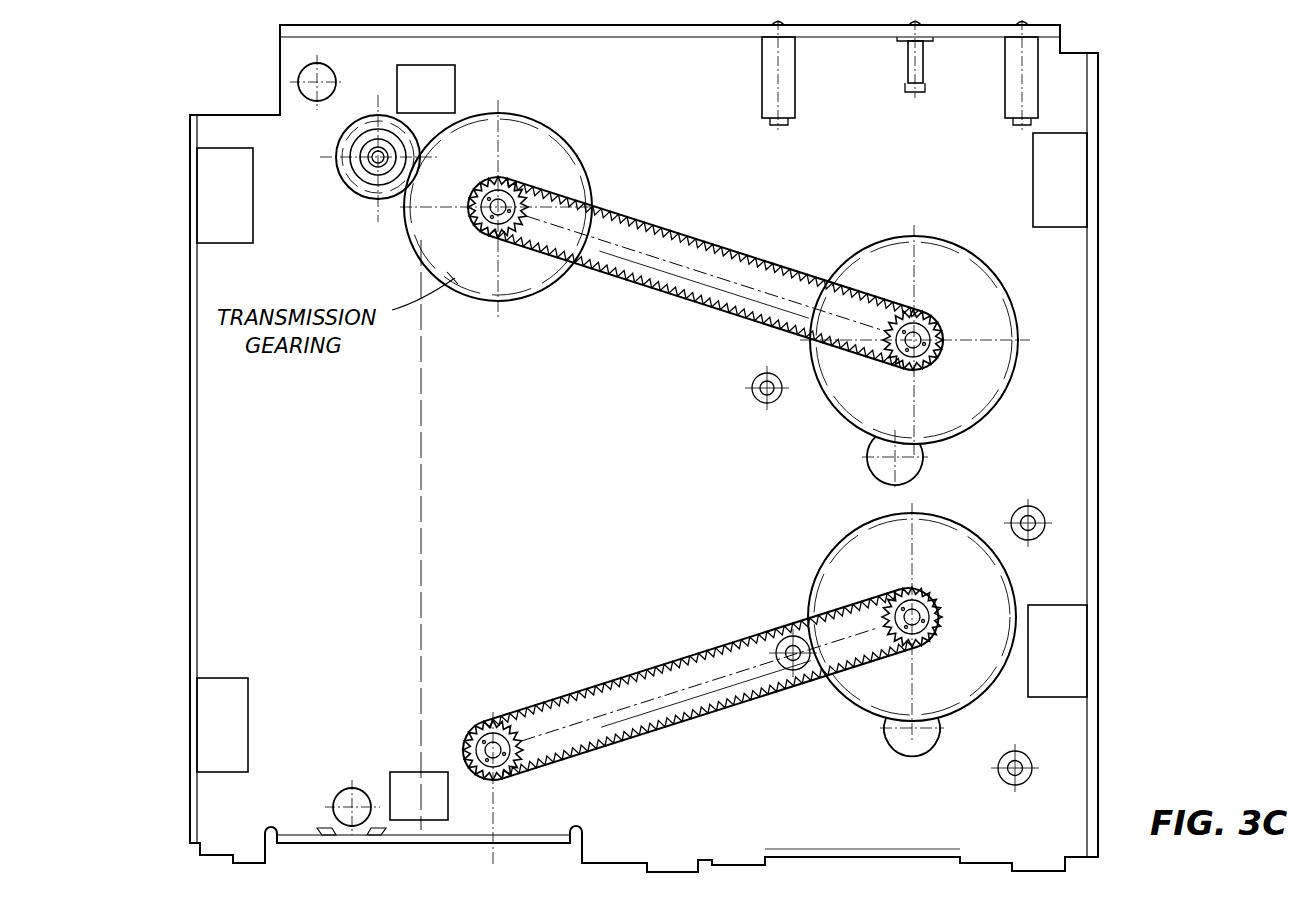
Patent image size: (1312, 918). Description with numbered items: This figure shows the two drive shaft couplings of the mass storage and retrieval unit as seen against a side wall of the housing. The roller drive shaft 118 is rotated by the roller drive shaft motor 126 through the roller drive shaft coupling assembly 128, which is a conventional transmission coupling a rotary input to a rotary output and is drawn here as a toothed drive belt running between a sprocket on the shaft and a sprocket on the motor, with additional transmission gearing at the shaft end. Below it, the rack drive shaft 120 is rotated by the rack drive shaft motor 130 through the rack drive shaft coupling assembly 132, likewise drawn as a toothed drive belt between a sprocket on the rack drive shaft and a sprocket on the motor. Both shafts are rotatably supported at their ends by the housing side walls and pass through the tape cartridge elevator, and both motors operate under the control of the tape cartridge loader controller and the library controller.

The roller drive shaft 118 is at (343, 182).
The rack drive shaft 120 is at (476, 720).
The roller drive shaft motor 126 is at (878, 243).
The roller drive shaft coupling assembly 128 is at (663, 202).
The rack drive shaft motor 130 is at (835, 547).
The rack drive shaft coupling assembly 132 is at (615, 614).